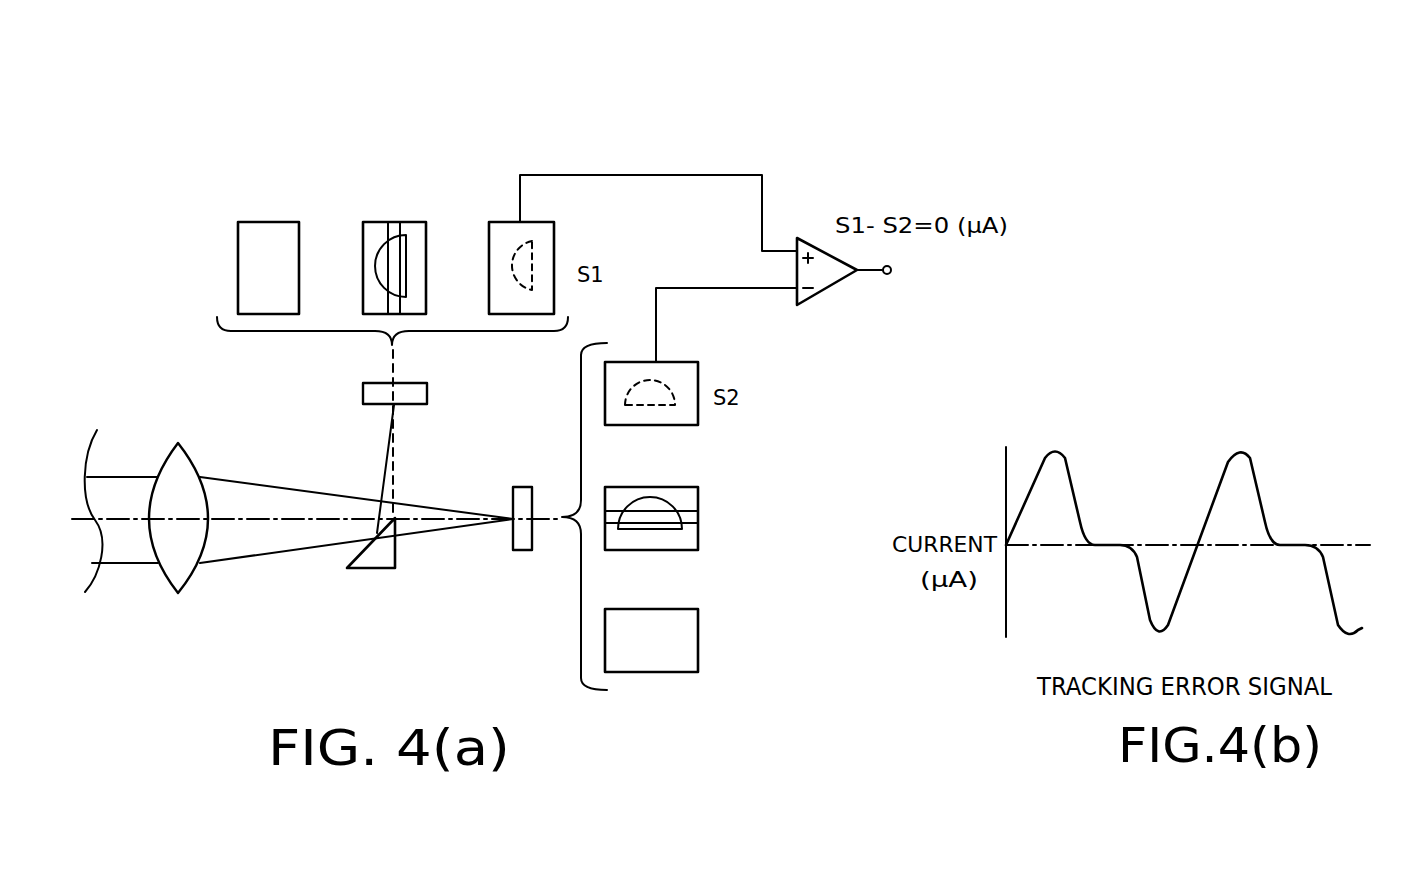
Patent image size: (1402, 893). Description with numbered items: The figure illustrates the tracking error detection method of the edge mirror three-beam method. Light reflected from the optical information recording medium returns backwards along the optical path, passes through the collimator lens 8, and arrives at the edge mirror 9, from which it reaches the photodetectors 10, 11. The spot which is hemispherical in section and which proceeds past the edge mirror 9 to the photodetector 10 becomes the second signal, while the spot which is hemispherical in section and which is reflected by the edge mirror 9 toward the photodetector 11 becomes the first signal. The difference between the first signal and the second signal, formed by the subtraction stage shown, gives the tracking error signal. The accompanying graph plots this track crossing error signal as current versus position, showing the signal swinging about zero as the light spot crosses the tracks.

The collimator lens 8 is at (188, 578).
The edge mirror 9 is at (397, 557).
The photodetector 10 is at (532, 493).
The photodetector 11 is at (428, 388).